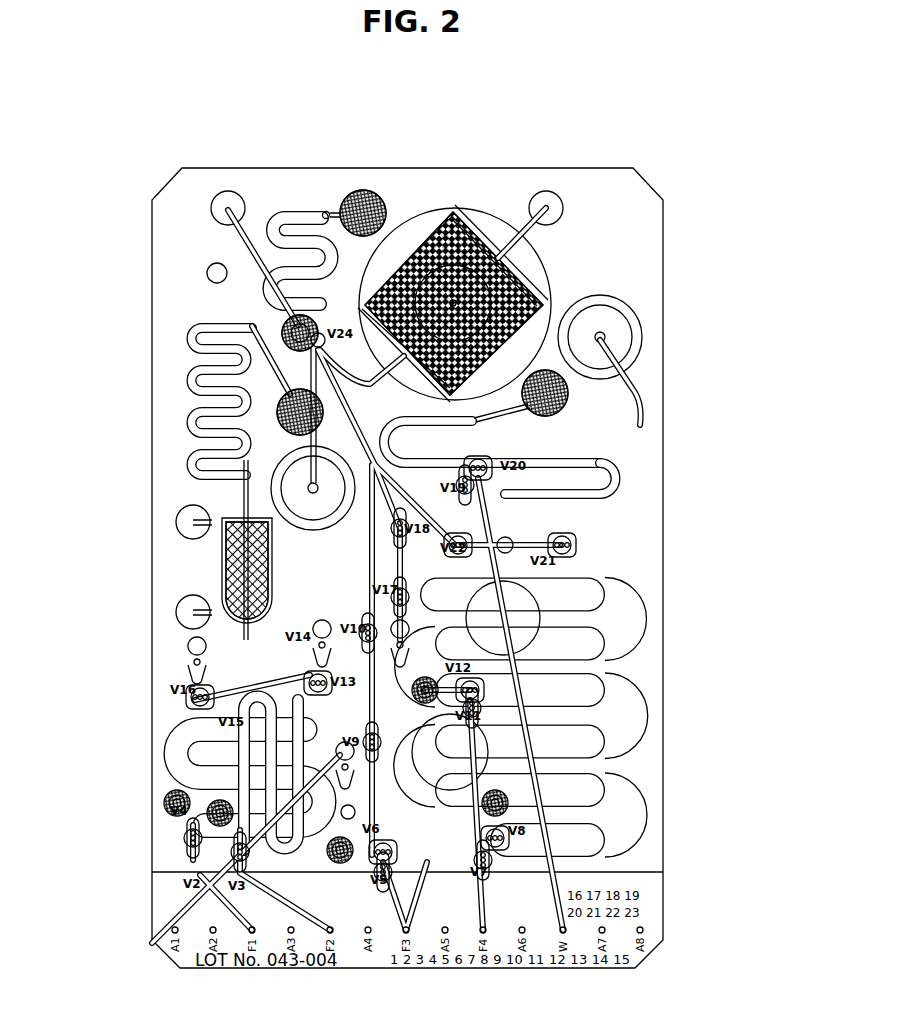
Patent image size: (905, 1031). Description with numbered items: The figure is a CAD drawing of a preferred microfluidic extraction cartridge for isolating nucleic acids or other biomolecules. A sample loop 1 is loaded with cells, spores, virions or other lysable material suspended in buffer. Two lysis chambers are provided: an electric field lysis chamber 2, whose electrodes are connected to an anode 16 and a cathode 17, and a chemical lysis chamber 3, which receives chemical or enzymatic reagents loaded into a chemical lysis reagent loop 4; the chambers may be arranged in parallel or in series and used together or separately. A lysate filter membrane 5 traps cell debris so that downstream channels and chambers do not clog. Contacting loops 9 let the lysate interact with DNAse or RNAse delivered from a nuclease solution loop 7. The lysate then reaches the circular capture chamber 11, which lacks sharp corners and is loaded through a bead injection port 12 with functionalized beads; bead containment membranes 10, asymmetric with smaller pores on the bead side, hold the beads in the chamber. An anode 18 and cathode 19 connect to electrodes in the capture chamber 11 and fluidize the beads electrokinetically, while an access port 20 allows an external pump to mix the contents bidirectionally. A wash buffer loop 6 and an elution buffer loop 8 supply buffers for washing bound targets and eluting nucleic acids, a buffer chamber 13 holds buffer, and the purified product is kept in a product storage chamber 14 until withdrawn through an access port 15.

The sample loop 1 is at (240, 862).
The electric field lysis chamber 2 is at (232, 558).
The chemical lysis chamber 3 is at (180, 390).
The chemical lysis reagent loop 4 is at (180, 767).
The lysate filter membrane 5 is at (287, 392).
The wash buffer loop 6 is at (622, 825).
The nuclease solution loop 7 is at (443, 845).
The elution buffer loop 8 is at (615, 548).
The contacting loops 9 is at (278, 213).
The bead containment membranes 10 is at (372, 238).
The capture chamber 11 is at (495, 238).
The bead injection port 12 is at (443, 228).
The buffer chamber 13 is at (497, 455).
The product storage chamber 14 is at (625, 478).
The access port 15 is at (615, 323).
The anode 16 is at (178, 622).
The cathode 17 is at (178, 520).
The anode 18 is at (222, 204).
The cathode 19 is at (548, 206).
The access port 20 is at (297, 483).